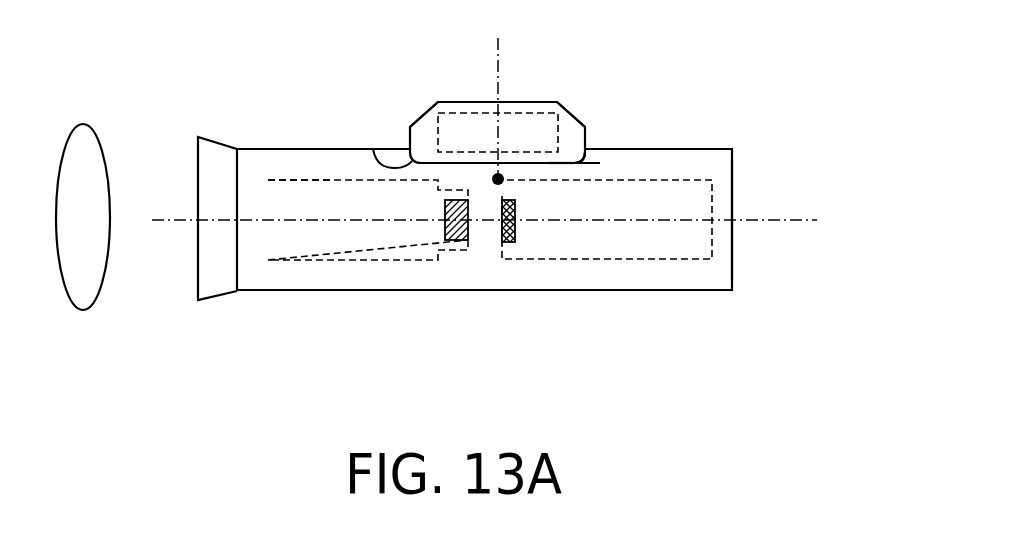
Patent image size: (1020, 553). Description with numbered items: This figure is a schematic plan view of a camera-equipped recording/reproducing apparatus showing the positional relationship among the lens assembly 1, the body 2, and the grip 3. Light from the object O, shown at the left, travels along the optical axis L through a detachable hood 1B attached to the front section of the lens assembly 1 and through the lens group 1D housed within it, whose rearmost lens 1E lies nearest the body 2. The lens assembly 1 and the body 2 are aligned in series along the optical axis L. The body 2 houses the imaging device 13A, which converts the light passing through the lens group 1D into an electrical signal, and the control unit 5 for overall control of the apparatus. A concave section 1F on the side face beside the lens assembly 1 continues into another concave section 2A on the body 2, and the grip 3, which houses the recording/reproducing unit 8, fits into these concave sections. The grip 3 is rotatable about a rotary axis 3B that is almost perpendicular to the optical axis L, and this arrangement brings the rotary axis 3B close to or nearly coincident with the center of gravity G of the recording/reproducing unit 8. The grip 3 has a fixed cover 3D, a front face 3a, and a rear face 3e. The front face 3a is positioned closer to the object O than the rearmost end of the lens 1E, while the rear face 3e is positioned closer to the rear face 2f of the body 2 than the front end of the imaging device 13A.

The lens assembly 1 is at (256, 105).
The detachable hood 1B is at (217, 300).
The lens group 1D is at (302, 180).
The lens 1E is at (445, 238).
The concave section 1F is at (375, 150).
The body 2 is at (668, 96).
The concave section 2A is at (590, 163).
The rear face 2f is at (733, 252).
The grip 3 is at (450, 82).
The front face 3a is at (410, 137).
The rotary axis 3B is at (498, 53).
The fixed cover 3D is at (558, 165).
The rear face 3e is at (588, 137).
The control unit 5 is at (692, 180).
The recording/reproducing unit 8 is at (515, 113).
The imaging device 13A is at (516, 243).
The center of gravity G is at (514, 192).
The optical axis L is at (172, 218).
The object O is at (83, 310).